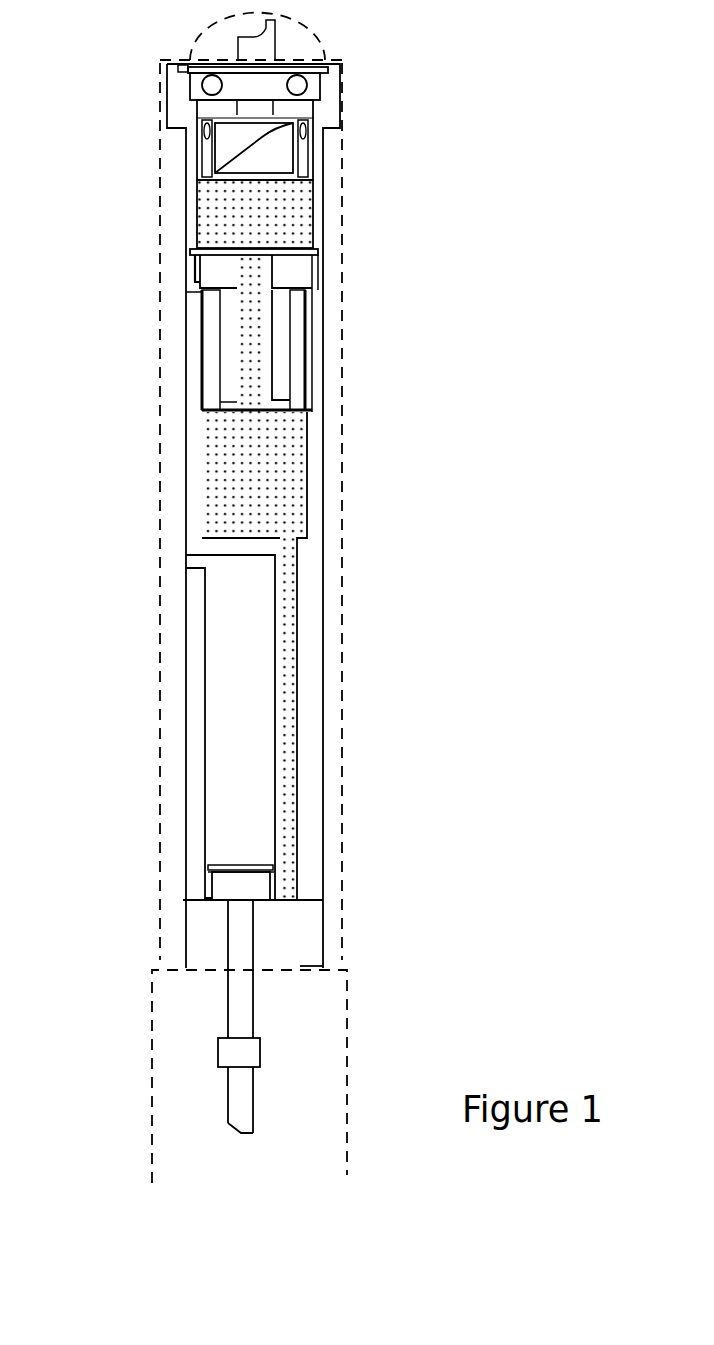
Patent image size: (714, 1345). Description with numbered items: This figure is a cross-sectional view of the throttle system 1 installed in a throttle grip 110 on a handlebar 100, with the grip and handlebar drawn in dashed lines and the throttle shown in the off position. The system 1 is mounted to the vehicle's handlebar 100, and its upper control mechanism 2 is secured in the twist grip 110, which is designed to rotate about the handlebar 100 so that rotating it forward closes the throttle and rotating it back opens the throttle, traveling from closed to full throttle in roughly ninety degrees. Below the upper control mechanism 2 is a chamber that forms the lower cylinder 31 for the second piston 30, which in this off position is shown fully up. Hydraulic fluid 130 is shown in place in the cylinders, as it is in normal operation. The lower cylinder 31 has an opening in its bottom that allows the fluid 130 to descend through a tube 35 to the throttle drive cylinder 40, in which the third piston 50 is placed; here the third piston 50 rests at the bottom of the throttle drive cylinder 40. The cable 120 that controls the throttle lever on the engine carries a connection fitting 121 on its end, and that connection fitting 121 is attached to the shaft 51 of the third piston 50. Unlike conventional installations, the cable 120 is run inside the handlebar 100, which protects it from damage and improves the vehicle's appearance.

The throttle system 1 is at (462, 485).
The upper control mechanism 2 is at (134, 74).
The second piston 30 is at (208, 313).
The lower cylinder 31 is at (205, 487).
The tube 35 is at (283, 723).
The throttle drive cylinder 40 is at (220, 697).
The third piston 50 is at (247, 862).
The shaft 51 is at (227, 1002).
The handlebar 100 is at (145, 1100).
The throttle grip 110 is at (340, 690).
The cable 120 is at (238, 1119).
The connection fitting 121 is at (255, 1057).
The hydraulic fluid 130 is at (218, 236).